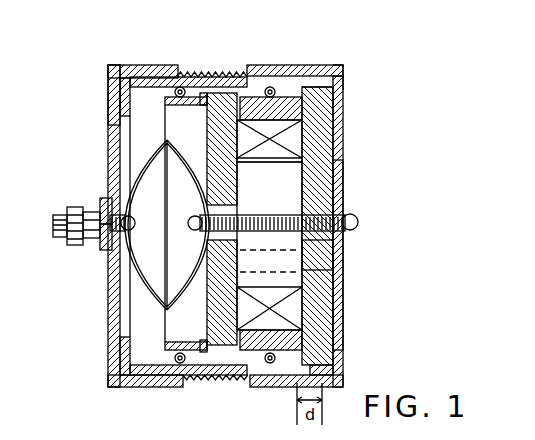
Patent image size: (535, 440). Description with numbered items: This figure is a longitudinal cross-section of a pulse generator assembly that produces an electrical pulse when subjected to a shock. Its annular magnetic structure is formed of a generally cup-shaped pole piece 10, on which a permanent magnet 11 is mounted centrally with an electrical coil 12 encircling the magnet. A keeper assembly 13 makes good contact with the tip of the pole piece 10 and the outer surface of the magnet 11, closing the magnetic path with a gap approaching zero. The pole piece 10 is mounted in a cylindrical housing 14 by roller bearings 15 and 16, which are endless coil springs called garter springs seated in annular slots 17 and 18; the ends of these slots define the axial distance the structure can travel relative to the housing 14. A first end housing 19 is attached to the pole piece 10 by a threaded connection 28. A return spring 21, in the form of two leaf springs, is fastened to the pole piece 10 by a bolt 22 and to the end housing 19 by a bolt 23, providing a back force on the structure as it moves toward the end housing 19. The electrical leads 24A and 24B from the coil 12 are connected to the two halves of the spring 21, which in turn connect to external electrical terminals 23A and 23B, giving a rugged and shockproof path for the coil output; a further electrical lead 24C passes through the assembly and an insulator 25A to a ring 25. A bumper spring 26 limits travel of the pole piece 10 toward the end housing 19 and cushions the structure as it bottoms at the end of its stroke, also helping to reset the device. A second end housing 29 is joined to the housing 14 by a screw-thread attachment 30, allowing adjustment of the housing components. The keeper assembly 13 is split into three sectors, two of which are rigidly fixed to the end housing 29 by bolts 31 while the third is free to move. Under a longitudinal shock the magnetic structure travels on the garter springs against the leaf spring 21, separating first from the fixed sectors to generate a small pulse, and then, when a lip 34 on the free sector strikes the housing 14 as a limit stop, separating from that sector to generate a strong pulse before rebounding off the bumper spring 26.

The pole piece 10 is at (236, 378).
The permanent magnet 11 is at (343, 256).
The electrical coil 12 is at (343, 177).
The keeper assembly 13 is at (345, 300).
The cylindrical housing 14 is at (216, 72).
The roller bearing 15 is at (186, 78).
The roller bearing 16 is at (264, 78).
The annular slot 17 is at (172, 106).
The annular slot 18 is at (296, 66).
The first end housing 19 is at (135, 68).
The return spring 21 is at (140, 147).
The bolt 22 is at (242, 226).
The bolt 23 is at (62, 215).
The external electrical terminal 23A is at (106, 202).
The external electrical terminal 23B is at (104, 248).
The electrical lead 24A is at (232, 180).
The electrical lead 24B is at (233, 253).
The electrical lead 24C is at (343, 145).
The ring 25 is at (343, 108).
The insulator 25A is at (343, 128).
The bumper spring 26 is at (118, 90).
The threaded connection 28 is at (178, 376).
The second end housing 29 is at (343, 66).
The screw-thread attachment 30 is at (270, 378).
The bolt 31 is at (358, 222).
The lip 34 is at (343, 90).